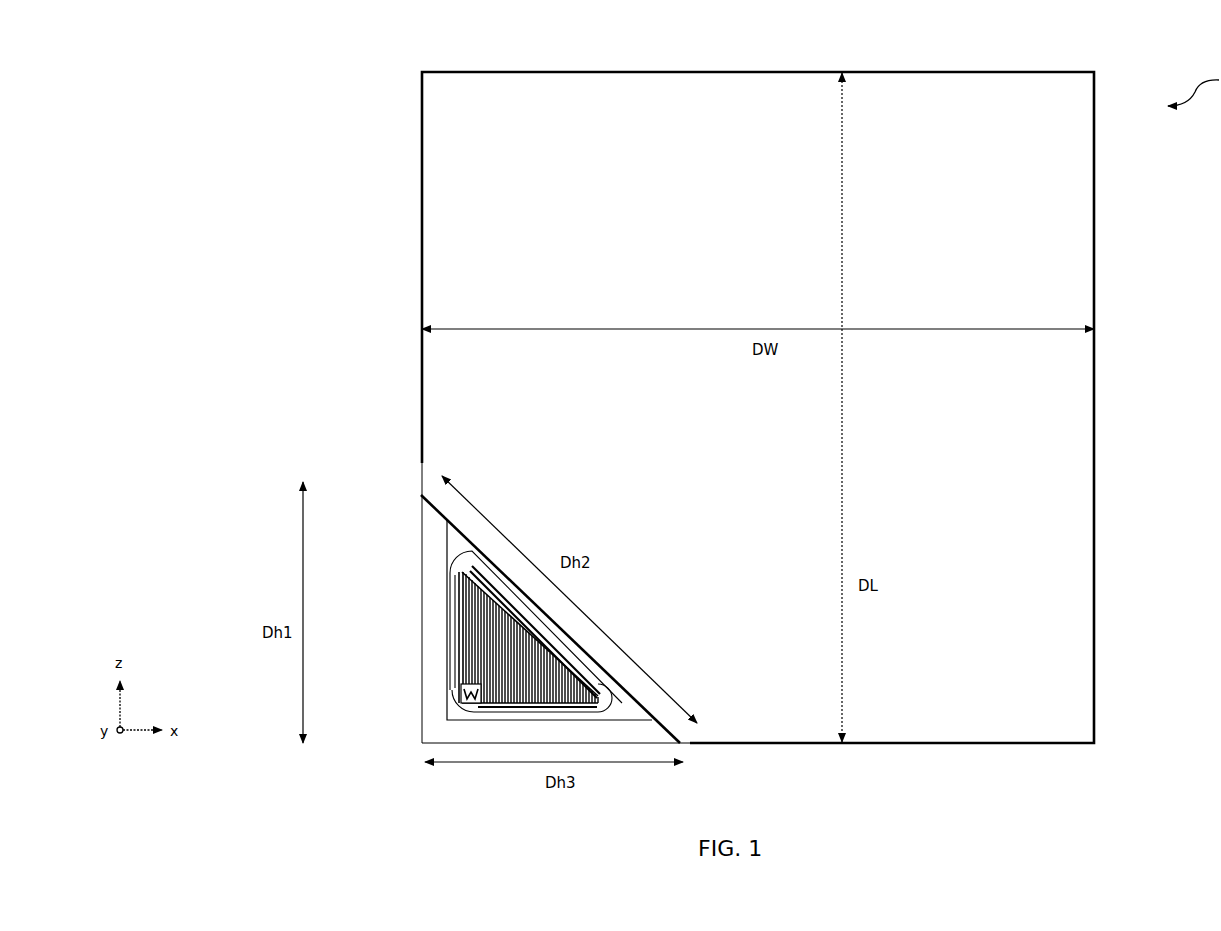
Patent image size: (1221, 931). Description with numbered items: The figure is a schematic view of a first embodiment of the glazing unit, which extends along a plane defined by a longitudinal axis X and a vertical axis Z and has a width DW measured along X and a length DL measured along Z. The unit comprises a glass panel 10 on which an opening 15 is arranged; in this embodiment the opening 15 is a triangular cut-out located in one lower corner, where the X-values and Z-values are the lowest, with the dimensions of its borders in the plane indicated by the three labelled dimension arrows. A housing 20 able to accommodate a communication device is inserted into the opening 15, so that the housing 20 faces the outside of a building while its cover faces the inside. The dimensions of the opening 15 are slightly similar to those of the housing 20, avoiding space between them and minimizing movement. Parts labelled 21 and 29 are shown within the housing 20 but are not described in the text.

The glass panel 10 is at (1056, 279).
The opening 15 is at (438, 506).
The housing 20 is at (400, 619).
The housing 21 is at (437, 659).
The connector 29 is at (461, 681).